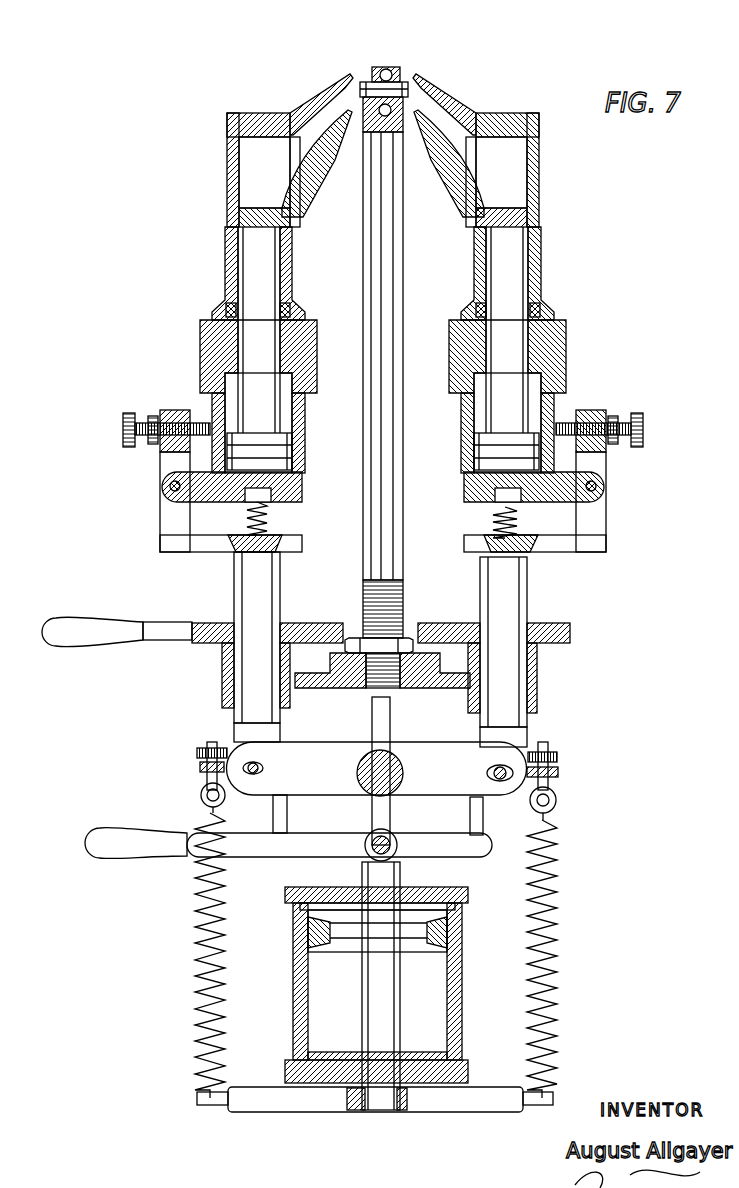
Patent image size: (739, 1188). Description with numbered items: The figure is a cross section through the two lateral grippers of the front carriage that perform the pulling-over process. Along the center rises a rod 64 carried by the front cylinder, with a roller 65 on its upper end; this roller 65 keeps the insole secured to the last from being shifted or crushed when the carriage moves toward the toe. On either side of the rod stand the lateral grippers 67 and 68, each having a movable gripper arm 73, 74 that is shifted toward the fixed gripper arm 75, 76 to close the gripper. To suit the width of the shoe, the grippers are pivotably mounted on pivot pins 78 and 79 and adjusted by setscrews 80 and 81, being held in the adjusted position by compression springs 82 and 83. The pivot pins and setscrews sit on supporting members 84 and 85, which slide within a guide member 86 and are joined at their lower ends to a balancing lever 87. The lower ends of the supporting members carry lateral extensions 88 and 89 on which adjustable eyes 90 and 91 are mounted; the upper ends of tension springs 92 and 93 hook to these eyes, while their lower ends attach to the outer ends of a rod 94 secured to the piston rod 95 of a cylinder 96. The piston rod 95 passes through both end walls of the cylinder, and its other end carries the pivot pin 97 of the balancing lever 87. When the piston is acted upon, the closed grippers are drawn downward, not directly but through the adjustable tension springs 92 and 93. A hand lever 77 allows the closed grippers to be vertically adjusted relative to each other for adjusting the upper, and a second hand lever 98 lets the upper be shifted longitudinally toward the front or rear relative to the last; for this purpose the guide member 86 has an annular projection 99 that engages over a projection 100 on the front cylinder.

The rod 64 is at (404, 268).
The roller 65 is at (383, 66).
The lateral gripper 67 is at (228, 264).
The lateral gripper 68 is at (537, 268).
The movable gripper arm 73 is at (316, 190).
The movable gripper arm 74 is at (449, 196).
The fixed gripper arm 75 is at (452, 94).
The fixed gripper arm 76 is at (320, 92).
The hand lever 77 is at (106, 848).
The pivot pin 78 is at (598, 494).
The pivot pin 79 is at (168, 494).
The setscrew 80 is at (640, 430).
The setscrew 81 is at (124, 426).
The compression spring 82 is at (270, 520).
The compression spring 83 is at (492, 520).
The supporting member 84 is at (528, 594).
The supporting member 85 is at (234, 580).
The guide member 86 is at (570, 634).
The balancing lever 87 is at (426, 760).
The lateral extension 88 is at (558, 772).
The lateral extension 89 is at (200, 764).
The adjustable eye 90 is at (557, 802).
The adjustable eye 91 is at (200, 796).
The tension spring 92 is at (196, 968).
The tension spring 93 is at (560, 970).
The rod 94 is at (312, 1110).
The piston rod 95 is at (394, 972).
The cylinder 96 is at (298, 976).
The pivot pin 97 is at (362, 778).
The hand lever 98 is at (78, 644).
The annular projection 99 is at (434, 648).
The projection 100 is at (358, 682).